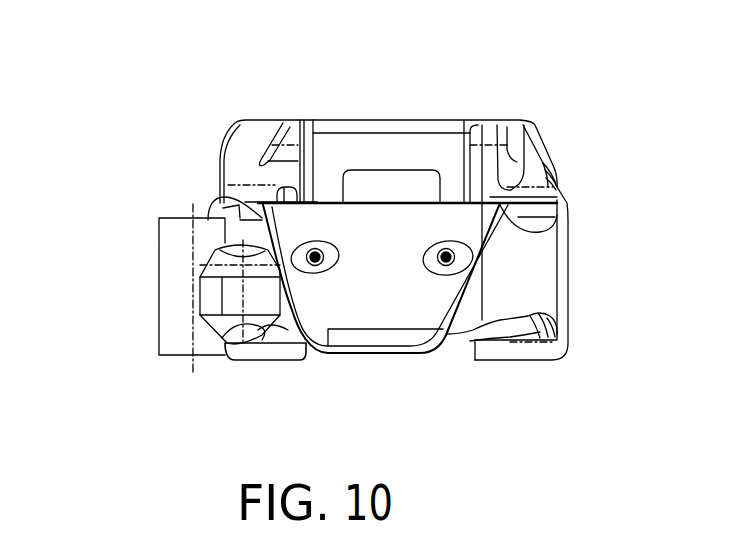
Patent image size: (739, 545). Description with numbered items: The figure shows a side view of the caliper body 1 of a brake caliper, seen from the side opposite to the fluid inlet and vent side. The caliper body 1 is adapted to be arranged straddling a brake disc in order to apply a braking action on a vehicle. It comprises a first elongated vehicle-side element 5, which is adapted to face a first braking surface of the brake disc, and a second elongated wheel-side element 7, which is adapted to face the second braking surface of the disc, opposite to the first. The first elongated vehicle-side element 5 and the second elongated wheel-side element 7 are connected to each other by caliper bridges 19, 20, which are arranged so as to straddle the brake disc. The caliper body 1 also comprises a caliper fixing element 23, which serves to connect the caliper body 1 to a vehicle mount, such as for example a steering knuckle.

The caliper body 1 is at (549, 102).
The first elongated vehicle-side element 5 is at (247, 210).
The second elongated wheel-side element 7 is at (528, 210).
The caliper bridge 19 is at (393, 147).
The caliper bridge 20 is at (392, 283).
The caliper fixing element 23 is at (172, 293).